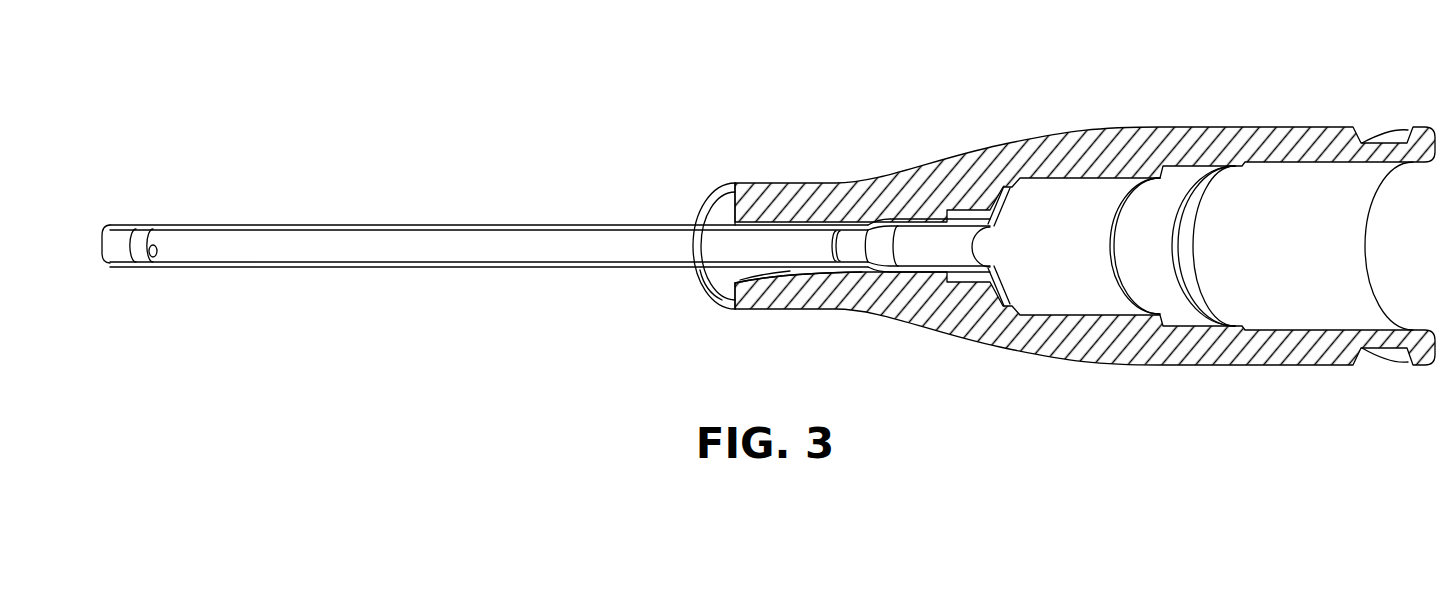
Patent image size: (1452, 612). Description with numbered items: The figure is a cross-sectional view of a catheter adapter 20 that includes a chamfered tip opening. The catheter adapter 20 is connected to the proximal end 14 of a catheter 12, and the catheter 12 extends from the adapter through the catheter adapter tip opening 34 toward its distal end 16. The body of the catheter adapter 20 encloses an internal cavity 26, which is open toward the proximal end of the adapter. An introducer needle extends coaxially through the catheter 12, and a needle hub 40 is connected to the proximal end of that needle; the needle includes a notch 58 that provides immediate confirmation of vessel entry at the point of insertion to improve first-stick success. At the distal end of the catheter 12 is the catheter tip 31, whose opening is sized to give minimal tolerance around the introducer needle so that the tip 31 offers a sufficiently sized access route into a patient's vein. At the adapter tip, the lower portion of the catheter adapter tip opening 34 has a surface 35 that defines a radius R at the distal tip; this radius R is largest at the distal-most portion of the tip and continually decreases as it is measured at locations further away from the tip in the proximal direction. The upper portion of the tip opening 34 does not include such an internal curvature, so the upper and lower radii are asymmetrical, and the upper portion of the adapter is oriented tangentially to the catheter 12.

The catheter 12 is at (355, 225).
The proximal end 14 is at (720, 207).
The distal end 16 is at (149, 182).
The catheter adapter 20 is at (1045, 80).
The internal cavity 26 is at (1399, 278).
The catheter tip 31 is at (105, 253).
The catheter adapter tip opening 34 is at (710, 302).
The surface 35 is at (777, 280).
The needle hub 40 is at (1013, 276).
The notch 58 is at (215, 248).
The radius R is at (739, 278).